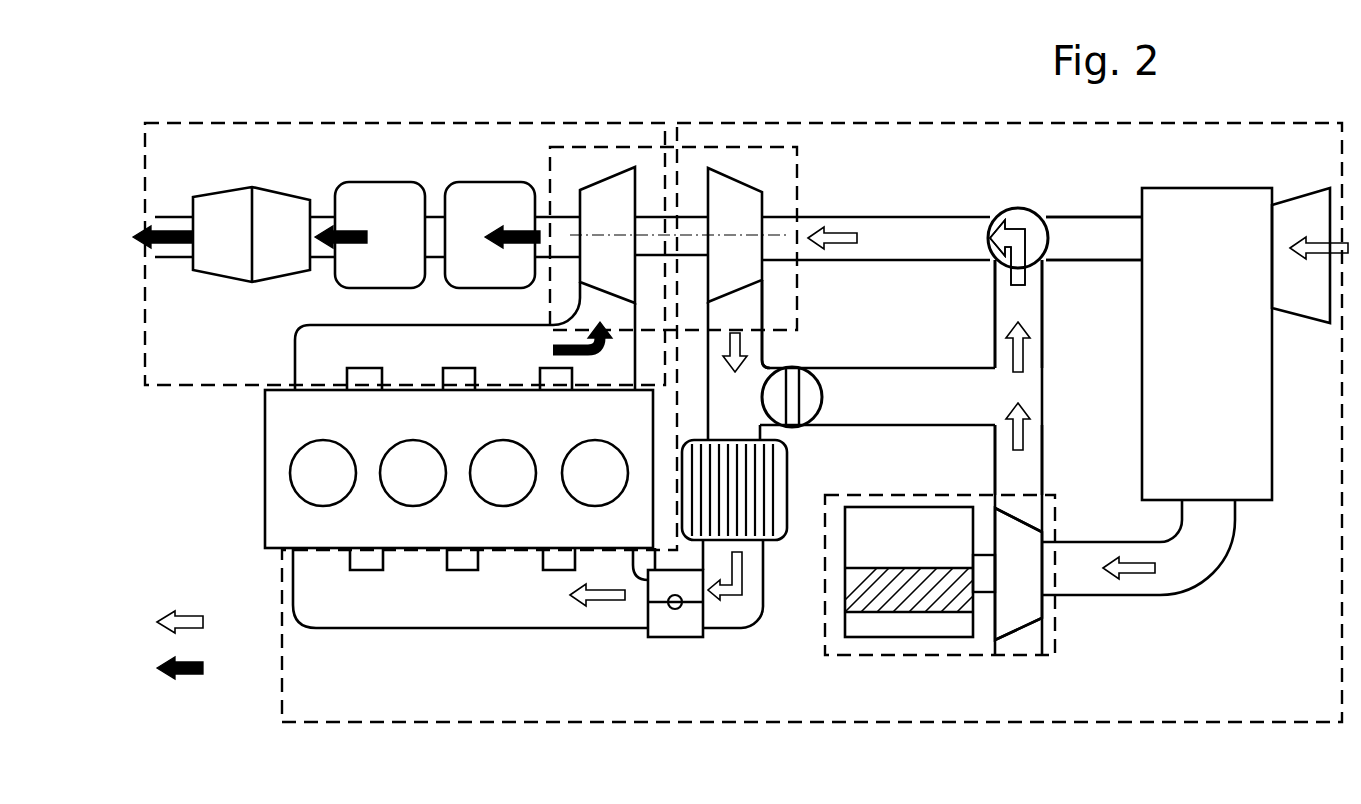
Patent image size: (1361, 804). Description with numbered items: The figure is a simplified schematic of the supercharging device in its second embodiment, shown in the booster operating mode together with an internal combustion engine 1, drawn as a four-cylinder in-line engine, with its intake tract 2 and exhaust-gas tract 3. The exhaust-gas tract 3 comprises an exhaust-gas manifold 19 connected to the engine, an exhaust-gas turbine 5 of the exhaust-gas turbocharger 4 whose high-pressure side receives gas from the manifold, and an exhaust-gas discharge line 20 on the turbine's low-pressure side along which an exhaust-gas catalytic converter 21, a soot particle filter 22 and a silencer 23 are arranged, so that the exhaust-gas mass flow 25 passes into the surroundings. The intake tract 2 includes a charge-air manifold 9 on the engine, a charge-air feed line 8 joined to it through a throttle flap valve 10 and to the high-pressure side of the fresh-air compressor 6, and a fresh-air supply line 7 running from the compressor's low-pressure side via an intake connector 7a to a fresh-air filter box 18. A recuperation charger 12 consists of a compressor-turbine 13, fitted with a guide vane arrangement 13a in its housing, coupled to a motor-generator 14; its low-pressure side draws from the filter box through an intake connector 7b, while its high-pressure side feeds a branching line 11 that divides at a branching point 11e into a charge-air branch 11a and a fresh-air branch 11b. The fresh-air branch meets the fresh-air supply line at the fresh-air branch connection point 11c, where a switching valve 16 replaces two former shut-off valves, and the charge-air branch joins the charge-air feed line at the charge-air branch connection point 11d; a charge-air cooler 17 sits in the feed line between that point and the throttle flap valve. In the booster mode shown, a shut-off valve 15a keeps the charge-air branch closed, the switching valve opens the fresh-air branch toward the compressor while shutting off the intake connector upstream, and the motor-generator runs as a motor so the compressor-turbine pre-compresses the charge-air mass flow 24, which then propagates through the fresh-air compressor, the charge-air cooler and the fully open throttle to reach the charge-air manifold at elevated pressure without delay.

The internal combustion engine 1 is at (260, 512).
The intake tract 2 is at (280, 685).
The exhaust-gas tract 3 is at (185, 390).
The exhaust-gas turbocharger 4 is at (698, 143).
The exhaust-gas turbine 5 is at (610, 200).
The fresh-air compressor 6 is at (737, 210).
The fresh-air supply line 7 is at (923, 237).
The intake connector 7a is at (1102, 252).
The intake connector 7b is at (1125, 585).
The charge-air feed line 8 is at (760, 327).
The charge-air manifold 9 is at (490, 598).
The throttle flap valve 10 is at (673, 610).
The branching line 11 is at (1035, 455).
The charge-air branch 11a is at (935, 398).
The fresh-air branch 11b is at (1008, 313).
The fresh-air branch connection point 11c is at (1043, 215).
The charge-air branch connection point 11d is at (742, 390).
The branching point 11e is at (1010, 398).
The recuperation charger 12 is at (975, 657).
The compressor-turbine 13 is at (1018, 597).
The guide vane arrangement 13a is at (1015, 645).
The motor-generator 14 is at (908, 623).
The shut-off valve 15a is at (805, 407).
The switching valve 16 is at (995, 213).
The charge-air cooler 17 is at (777, 540).
The fresh-air filter box 18 is at (1245, 344).
The exhaust-gas manifold 19 is at (310, 360).
The exhaust-gas discharge line 20 is at (565, 218).
The exhaust-gas catalytic converter 21 is at (495, 200).
The soot particle filter 22 is at (375, 203).
The silencer 23 is at (272, 203).
The charge-air mass flow 24 is at (199, 623).
The exhaust-gas mass flow 25 is at (188, 455).